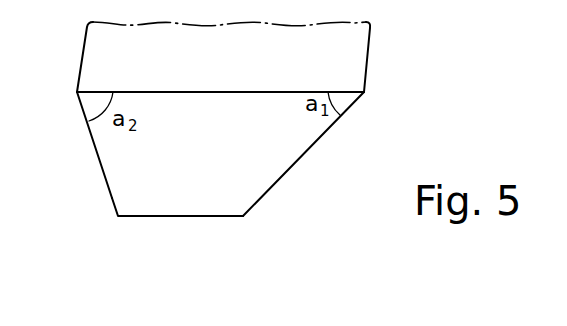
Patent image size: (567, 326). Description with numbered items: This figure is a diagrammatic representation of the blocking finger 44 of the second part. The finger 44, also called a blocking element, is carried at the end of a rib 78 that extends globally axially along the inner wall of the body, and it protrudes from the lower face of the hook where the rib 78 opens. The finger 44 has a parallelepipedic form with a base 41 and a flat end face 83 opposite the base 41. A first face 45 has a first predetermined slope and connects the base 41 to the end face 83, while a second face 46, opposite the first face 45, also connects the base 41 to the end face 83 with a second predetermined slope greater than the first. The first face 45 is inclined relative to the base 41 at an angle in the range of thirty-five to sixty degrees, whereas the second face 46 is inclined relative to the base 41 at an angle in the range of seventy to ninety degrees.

The rib 78 is at (238, 70).
The base 41 is at (217, 94).
The second face 46 is at (97, 155).
The first face 45 is at (292, 168).
The blocking finger 44 is at (112, 218).
The flat end face 83 is at (180, 218).